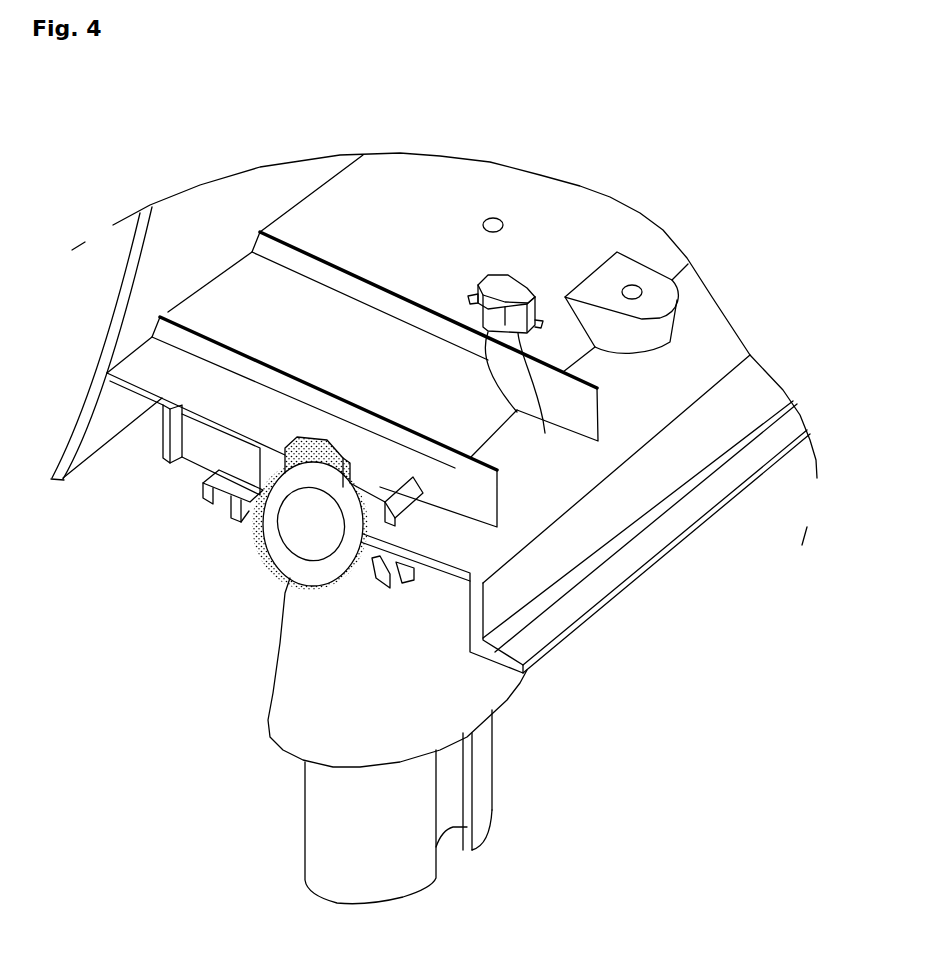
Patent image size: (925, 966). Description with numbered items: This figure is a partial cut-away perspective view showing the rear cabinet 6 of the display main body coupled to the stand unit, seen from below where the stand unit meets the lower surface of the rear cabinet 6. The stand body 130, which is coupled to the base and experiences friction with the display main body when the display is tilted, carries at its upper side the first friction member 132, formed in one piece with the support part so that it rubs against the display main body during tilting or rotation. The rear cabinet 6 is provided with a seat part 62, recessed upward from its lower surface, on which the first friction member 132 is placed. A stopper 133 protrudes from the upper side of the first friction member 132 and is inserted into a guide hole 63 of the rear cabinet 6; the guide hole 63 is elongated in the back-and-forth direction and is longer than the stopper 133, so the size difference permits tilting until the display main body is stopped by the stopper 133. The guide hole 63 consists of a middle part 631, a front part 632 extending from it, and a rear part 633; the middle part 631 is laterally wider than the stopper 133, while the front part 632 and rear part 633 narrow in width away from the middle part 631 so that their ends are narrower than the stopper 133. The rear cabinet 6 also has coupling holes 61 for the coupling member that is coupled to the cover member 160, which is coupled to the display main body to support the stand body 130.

The rear cabinet 6 is at (247, 202).
The coupling hole 61 is at (492, 217).
The seat part 62 is at (360, 503).
The guide hole 63 is at (357, 456).
The middle part 631 is at (488, 345).
The front part 632 is at (425, 346).
The rear part 633 is at (476, 306).
The stand body 130 is at (480, 705).
The first friction member 132 is at (297, 558).
The stopper 133 is at (313, 462).
The cover member 160 is at (240, 525).